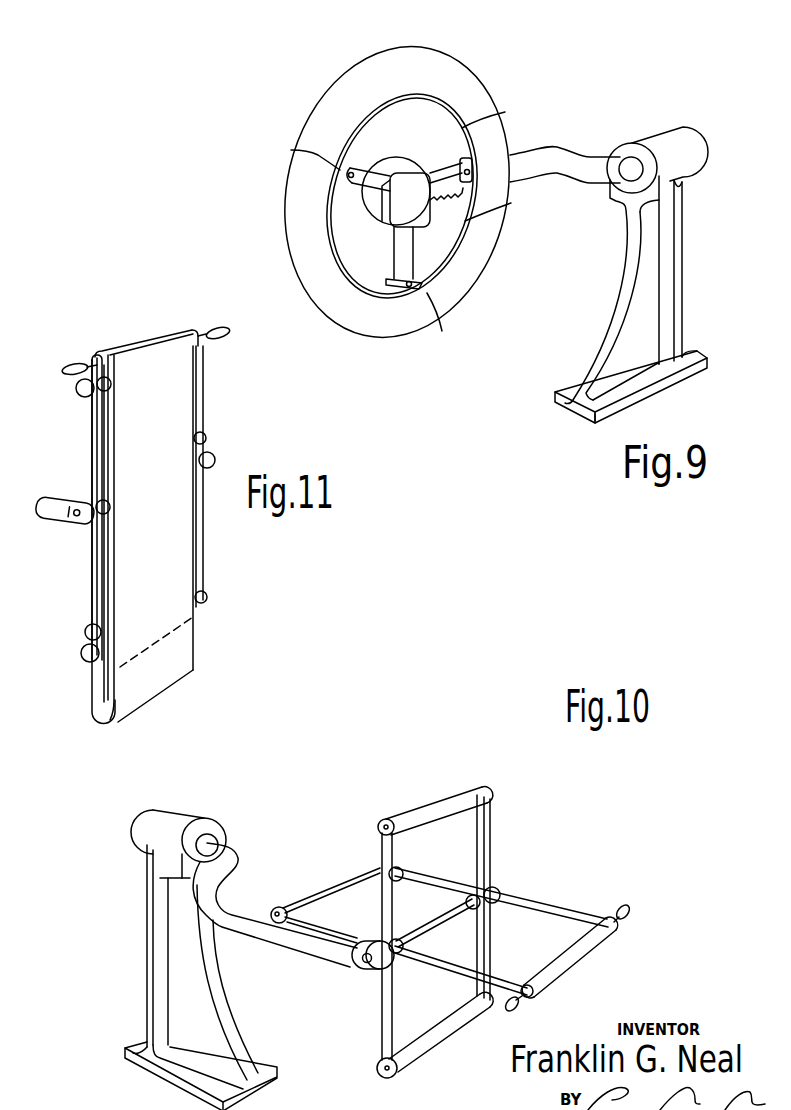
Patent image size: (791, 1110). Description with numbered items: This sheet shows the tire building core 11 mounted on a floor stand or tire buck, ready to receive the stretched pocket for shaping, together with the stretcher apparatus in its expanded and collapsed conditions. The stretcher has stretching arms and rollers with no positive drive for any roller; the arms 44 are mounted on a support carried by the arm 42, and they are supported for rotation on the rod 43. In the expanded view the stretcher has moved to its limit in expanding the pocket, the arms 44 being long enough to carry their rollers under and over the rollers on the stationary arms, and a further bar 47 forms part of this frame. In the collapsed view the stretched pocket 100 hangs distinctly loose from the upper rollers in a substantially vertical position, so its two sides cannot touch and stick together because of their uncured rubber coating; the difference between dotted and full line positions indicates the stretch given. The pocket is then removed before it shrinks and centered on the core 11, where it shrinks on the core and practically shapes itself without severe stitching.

In FIG. 9, the core 11 is at (428, 63).
In FIG. 11, the arm 42 is at (52, 512).
In FIG. 10, the arm 42 is at (293, 942).
In FIG. 10, the rod 43 is at (447, 921).
In FIG. 11, the arms 44 is at (90, 448).
In FIG. 10, the arms 44 is at (550, 908).
In FIG. 10, the end bar 47 is at (575, 960).
In FIG. 11, the stretched pocket 100 is at (148, 686).